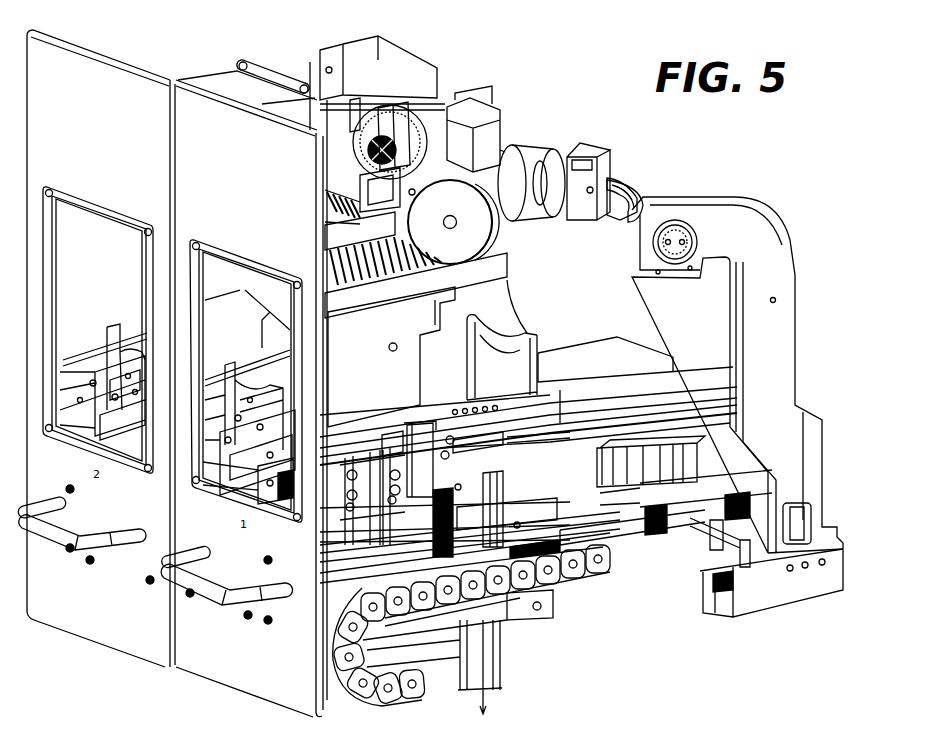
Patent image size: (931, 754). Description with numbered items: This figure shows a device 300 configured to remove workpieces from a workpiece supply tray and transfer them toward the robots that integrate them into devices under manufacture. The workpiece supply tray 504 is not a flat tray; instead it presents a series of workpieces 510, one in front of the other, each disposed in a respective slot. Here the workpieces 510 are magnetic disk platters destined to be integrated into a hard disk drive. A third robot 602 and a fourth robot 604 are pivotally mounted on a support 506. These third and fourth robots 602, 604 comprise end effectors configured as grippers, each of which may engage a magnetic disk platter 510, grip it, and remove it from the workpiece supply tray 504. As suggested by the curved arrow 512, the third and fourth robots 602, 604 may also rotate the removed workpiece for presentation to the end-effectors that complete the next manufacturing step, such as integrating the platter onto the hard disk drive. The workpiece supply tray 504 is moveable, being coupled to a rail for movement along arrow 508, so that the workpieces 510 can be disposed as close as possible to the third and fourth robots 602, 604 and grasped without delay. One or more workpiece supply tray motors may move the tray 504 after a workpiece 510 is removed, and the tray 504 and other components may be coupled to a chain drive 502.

The tape dispensing system 300 is at (640, 167).
The chain drive 502 is at (597, 596).
The workpiece supply tray 504 is at (506, 266).
The support 506 is at (781, 228).
The arrow 508 is at (647, 371).
The workpiece 510 is at (496, 230).
The curved arrow 512 is at (498, 92).
The third robot 602 is at (530, 148).
The fourth robot 604 is at (405, 116).